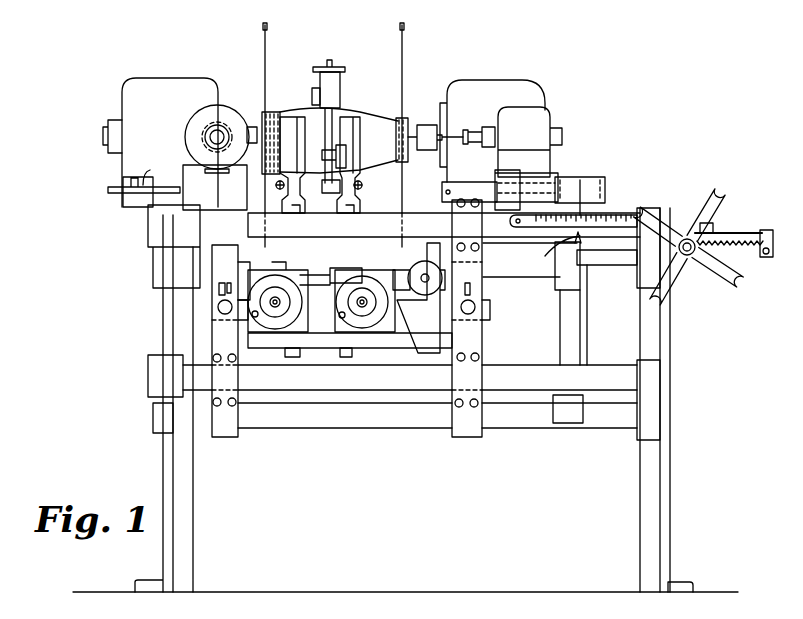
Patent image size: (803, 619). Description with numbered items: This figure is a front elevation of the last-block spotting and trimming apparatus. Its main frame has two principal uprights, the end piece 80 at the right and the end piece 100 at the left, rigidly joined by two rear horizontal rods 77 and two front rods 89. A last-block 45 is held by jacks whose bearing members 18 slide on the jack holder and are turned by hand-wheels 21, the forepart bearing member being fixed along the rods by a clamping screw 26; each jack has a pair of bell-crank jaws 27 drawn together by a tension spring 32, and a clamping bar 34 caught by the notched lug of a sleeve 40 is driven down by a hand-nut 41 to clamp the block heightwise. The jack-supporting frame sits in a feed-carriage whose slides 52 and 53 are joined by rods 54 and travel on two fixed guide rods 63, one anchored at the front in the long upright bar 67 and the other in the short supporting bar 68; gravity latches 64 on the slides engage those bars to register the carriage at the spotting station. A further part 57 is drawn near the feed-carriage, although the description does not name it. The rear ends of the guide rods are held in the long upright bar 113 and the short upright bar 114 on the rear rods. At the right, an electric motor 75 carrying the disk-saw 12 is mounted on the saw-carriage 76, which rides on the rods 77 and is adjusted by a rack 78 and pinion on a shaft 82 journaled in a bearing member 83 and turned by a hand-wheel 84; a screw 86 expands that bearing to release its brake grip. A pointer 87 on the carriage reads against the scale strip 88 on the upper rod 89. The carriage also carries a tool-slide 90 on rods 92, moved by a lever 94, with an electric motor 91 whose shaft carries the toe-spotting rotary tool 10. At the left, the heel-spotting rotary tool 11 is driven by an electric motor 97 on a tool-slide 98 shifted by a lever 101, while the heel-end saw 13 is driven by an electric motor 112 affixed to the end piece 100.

The rotary tool 10 is at (441, 133).
The rotary tool 11 is at (203, 137).
The circular disk-saw 12 is at (404, 44).
The saw 13 is at (263, 36).
The bearing member 18 is at (333, 348).
The hand-wheel 21 is at (276, 326).
The clamping screw 26 is at (355, 281).
The jaws 27 is at (287, 118).
The tension spring 32 is at (363, 189).
The clamping bar 34 is at (313, 97).
The sleeve 40 is at (337, 93).
The hand-nut 41 is at (334, 68).
The last-block 45 is at (390, 113).
The slide 52 is at (420, 348).
The slide 53 is at (247, 272).
The rods 54 is at (372, 339).
The wheel 57 is at (411, 250).
The guide rods 63 is at (218, 309).
The gravity latches 64 is at (215, 290).
The upright bar 67 is at (481, 350).
The supporting bar 68 is at (216, 335).
The electric motor 75 is at (522, 88).
The carriage 76 is at (583, 343).
The horizontal rods 77 is at (621, 270).
The rack 78 is at (730, 238).
The frame member 80 is at (670, 503).
The shaft 82 is at (679, 258).
The bearing member 83 is at (677, 222).
The hand-wheel 84 is at (717, 195).
The screw 86 is at (711, 224).
The pointer 87 is at (548, 250).
The strip 88 is at (615, 219).
The rods 89 is at (190, 378).
The tool-slide 90 is at (548, 180).
The electric motor 91 is at (545, 121).
The rod 92 is at (473, 190).
The lever 94 is at (560, 208).
The electric motor 97 is at (201, 111).
The tool-slide 98 is at (190, 222).
The frame member 100 is at (190, 505).
The lever 101 is at (110, 185).
The electric motor 112 is at (152, 72).
The upright bar 113 is at (227, 430).
The upright bar 114 is at (465, 430).